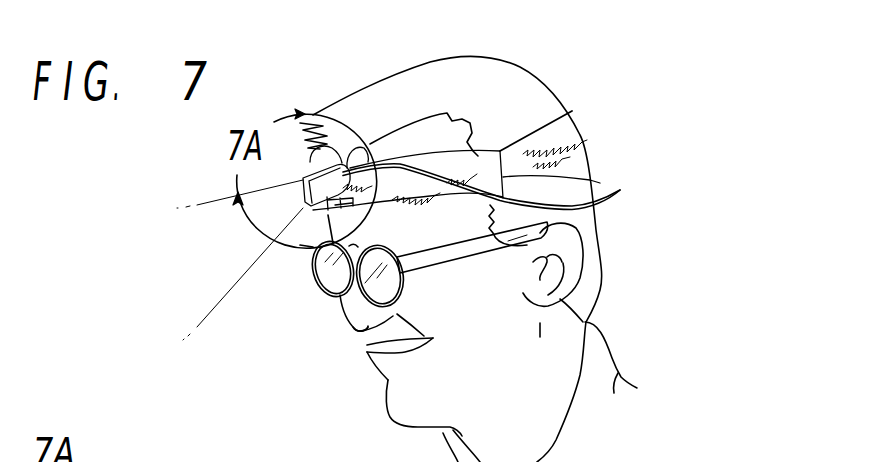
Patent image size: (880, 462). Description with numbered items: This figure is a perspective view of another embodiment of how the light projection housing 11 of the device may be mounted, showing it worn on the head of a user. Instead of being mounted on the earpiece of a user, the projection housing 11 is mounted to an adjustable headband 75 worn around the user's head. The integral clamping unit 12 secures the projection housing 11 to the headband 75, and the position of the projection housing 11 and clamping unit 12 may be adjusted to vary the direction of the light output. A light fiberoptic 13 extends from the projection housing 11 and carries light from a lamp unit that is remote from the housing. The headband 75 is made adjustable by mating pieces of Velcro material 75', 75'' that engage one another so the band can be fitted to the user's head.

The light projection housing 11 is at (314, 128).
The clamping unit 12 is at (305, 217).
The light fiberoptic 13 is at (605, 202).
The adjustable headband 75 is at (543, 84).
The Velcro material piece 75' is at (577, 148).
The Velcro material piece 75'' is at (408, 105).